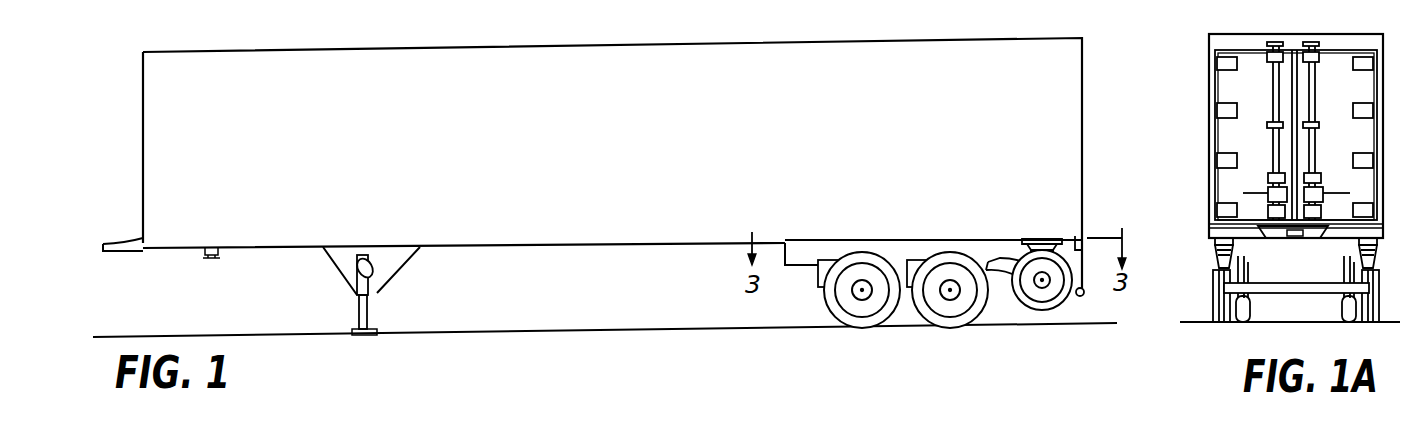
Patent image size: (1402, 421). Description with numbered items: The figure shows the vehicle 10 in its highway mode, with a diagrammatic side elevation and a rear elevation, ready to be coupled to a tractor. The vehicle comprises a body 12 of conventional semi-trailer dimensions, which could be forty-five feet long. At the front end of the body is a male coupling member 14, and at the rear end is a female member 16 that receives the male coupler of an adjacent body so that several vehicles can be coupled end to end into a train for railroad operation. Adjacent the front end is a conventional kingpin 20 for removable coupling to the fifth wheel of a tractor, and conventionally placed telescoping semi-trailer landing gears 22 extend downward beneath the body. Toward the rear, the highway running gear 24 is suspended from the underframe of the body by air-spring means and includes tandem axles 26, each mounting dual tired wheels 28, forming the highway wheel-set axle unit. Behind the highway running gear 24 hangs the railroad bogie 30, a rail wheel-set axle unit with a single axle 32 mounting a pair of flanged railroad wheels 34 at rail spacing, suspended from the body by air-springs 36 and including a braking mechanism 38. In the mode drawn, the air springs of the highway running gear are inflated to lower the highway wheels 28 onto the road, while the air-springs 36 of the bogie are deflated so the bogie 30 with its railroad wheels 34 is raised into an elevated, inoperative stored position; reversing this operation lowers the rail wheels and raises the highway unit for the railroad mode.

In FIG. 1, the vehicle 10 is at (1105, 116).
In FIG. 1, the body 12 is at (1072, 68).
In FIG. 1, the male coupling member 14 is at (118, 251).
In FIG. 1A, the female member 16 is at (1290, 238).
In FIG. 1, the kingpin 20 is at (214, 256).
In FIG. 1, the landing gears 22 is at (370, 308).
In FIG. 1, the highway running gear 24 is at (801, 346).
In FIG. 1, the tandem axles 26 is at (862, 290).
In FIG. 1, the dual tired wheels 28 is at (838, 318).
In FIG. 1A, the dual tired wheels 28 is at (1213, 322).
In FIG. 1, the railroad bogie 30 is at (1072, 310).
In FIG. 1A, the single axle 32 is at (1283, 284).
In FIG. 1, the flanged railroad wheels 34 is at (1048, 312).
In FIG. 1A, the flanged railroad wheels 34 is at (1235, 322).
In FIG. 1, the air-springs 36 is at (1044, 239).
In FIG. 1A, the air-springs 36 is at (1216, 253).
In FIG. 1, the braking mechanism 38 is at (1003, 259).